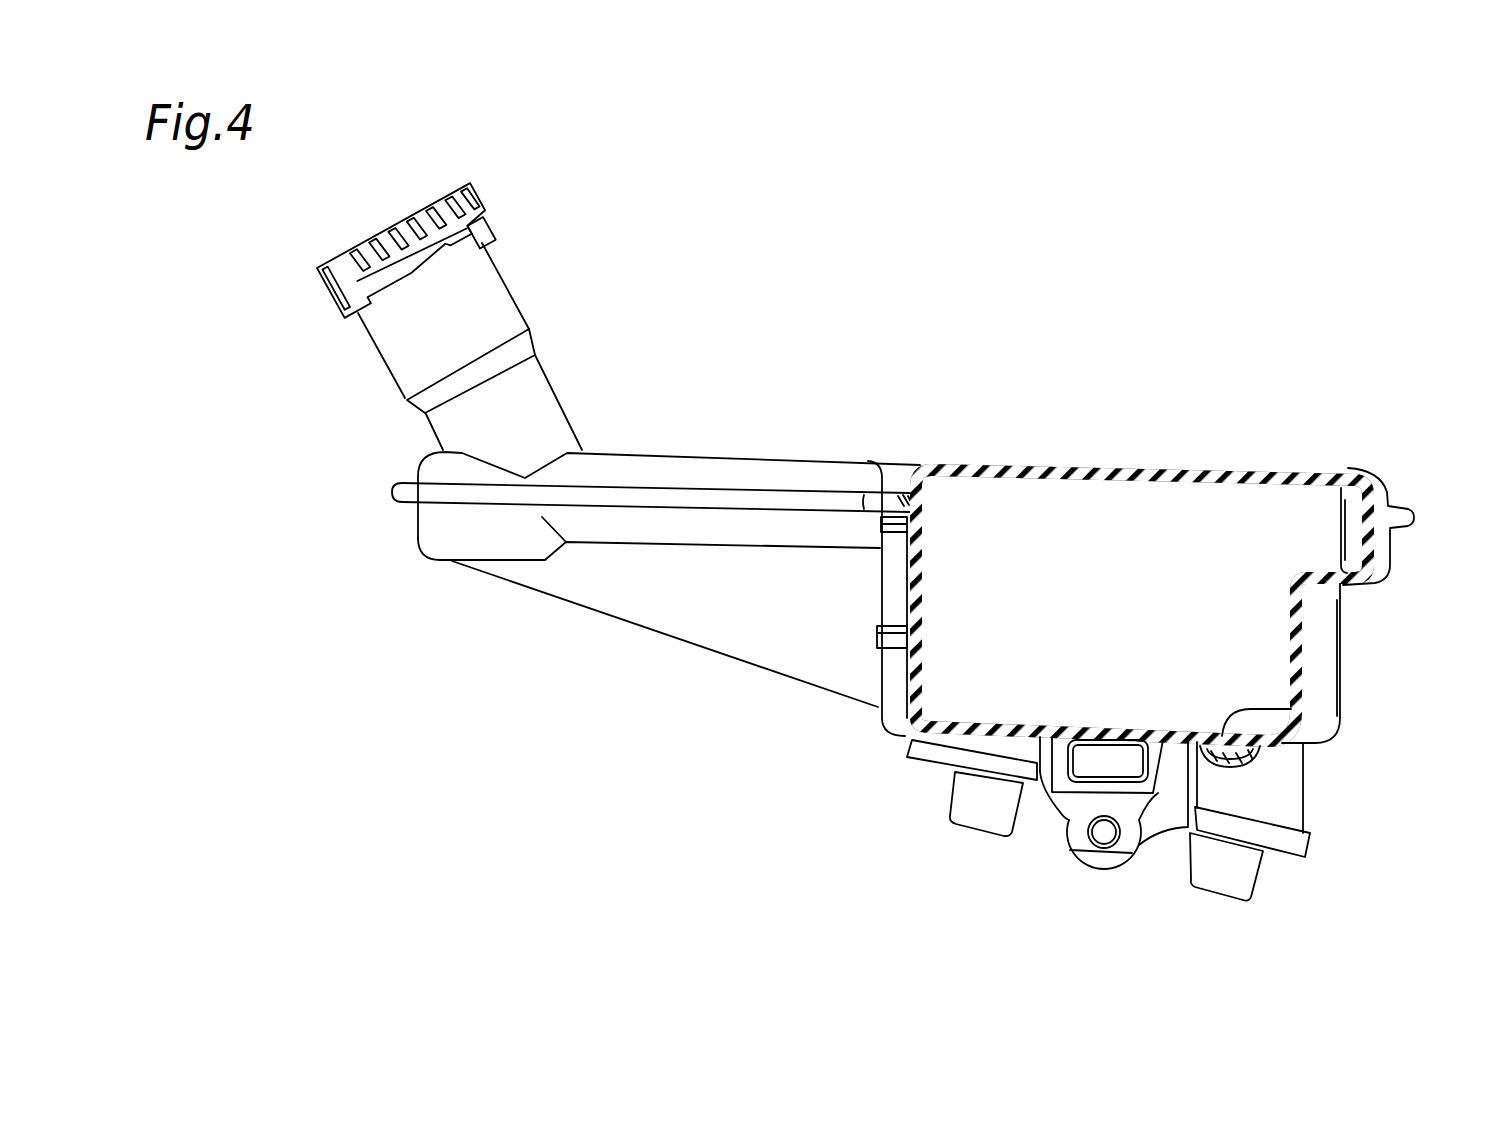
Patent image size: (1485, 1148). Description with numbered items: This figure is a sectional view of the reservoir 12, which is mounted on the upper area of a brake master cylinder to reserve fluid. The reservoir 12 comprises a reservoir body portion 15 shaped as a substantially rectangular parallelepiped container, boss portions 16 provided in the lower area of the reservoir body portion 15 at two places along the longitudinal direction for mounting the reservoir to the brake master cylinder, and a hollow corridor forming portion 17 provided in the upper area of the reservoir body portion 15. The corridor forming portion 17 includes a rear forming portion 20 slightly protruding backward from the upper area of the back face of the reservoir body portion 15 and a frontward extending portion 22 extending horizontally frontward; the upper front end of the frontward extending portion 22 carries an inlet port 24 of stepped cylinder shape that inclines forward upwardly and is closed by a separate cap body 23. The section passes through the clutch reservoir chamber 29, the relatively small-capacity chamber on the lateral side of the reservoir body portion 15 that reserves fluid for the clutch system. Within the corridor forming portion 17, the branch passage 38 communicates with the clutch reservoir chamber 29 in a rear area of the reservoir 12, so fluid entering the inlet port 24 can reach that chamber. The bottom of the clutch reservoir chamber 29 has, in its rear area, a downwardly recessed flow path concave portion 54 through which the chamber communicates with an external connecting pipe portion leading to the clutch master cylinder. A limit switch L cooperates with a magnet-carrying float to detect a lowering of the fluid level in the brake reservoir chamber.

The reservoir 12 is at (1123, 437).
The reservoir body portion 15 is at (1339, 674).
The boss portions 16 is at (940, 755).
The corridor forming portion 17 is at (765, 458).
The rear forming portion 20 is at (1385, 563).
The frontward extending portion 22 is at (670, 473).
The cap body 23 is at (484, 196).
The inlet port 24 is at (490, 307).
The clutch reservoir chamber 29 is at (1008, 583).
The branch passage 38 is at (1350, 533).
The flow path concave portion 54 is at (1248, 712).
The limit switch L is at (1102, 765).